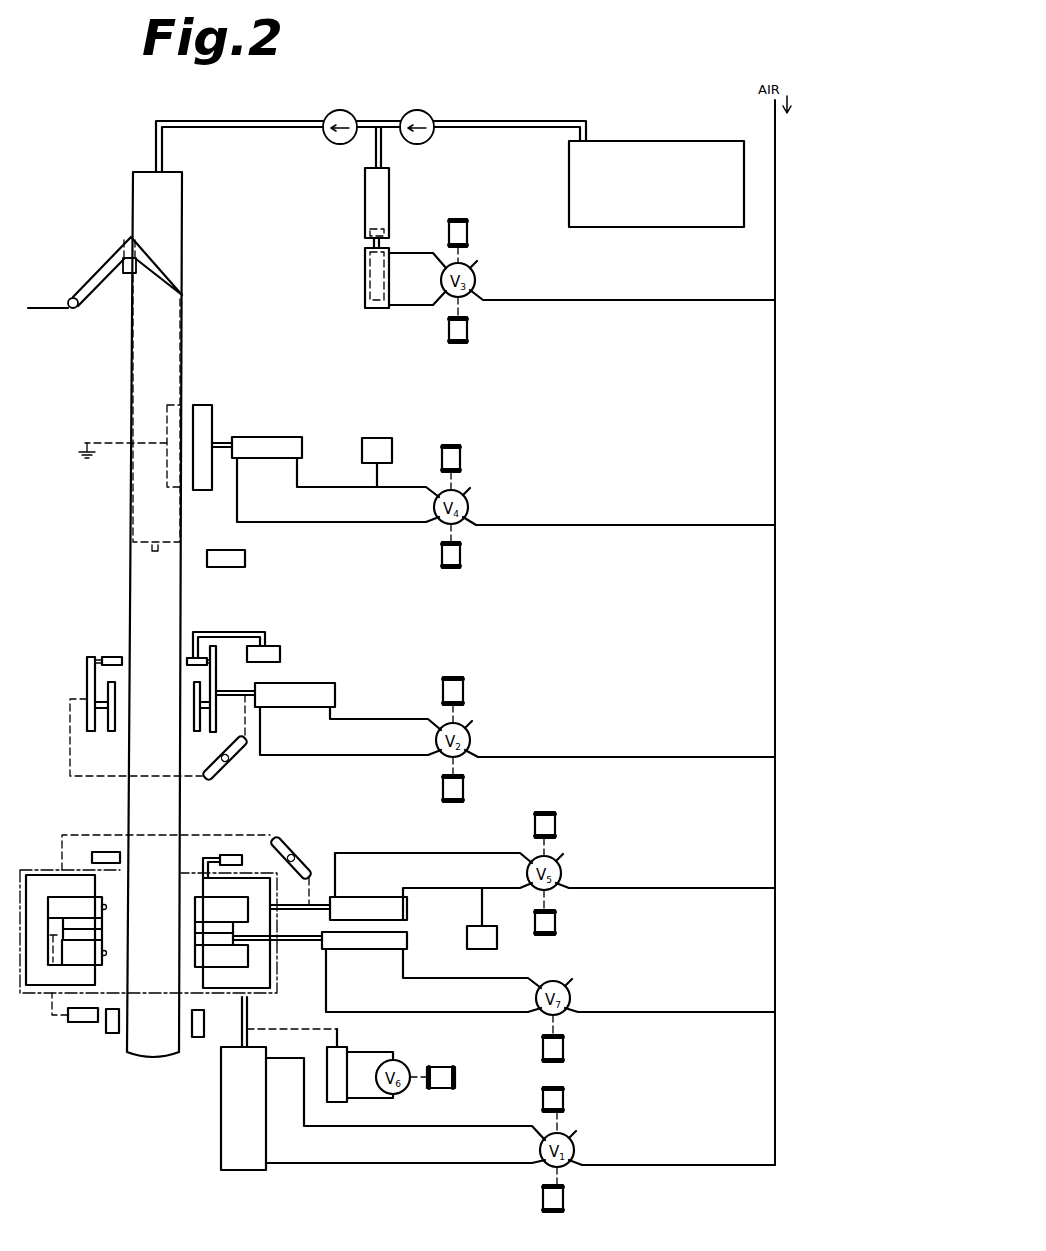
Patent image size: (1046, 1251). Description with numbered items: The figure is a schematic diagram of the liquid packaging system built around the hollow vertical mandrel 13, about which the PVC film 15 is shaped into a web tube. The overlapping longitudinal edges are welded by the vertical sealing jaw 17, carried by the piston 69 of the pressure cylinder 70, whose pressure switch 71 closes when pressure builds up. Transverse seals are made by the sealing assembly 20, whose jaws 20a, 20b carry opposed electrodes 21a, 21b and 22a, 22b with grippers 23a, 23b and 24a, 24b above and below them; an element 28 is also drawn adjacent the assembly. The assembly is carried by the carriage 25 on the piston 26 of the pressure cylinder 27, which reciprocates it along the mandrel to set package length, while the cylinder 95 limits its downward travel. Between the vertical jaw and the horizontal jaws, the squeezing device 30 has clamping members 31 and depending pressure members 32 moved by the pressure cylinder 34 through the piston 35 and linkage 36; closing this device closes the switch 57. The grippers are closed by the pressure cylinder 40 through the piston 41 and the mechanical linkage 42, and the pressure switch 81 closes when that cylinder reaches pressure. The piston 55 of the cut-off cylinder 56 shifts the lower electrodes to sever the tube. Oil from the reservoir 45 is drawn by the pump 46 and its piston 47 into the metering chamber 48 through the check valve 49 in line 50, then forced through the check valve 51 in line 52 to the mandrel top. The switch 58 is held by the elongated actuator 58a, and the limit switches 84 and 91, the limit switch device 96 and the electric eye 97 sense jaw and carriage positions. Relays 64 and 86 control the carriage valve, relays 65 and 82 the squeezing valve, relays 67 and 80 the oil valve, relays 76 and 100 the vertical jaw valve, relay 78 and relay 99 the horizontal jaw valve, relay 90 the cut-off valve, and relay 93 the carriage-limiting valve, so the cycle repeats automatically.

The mandrel 13 is at (182, 205).
The PVC film 15 is at (55, 310).
The vertical sealing jaw 17 is at (205, 405).
The high frequency sealing assembly 20 is at (148, 903).
The jaw 20a is at (90, 930).
The jaw 20b is at (209, 933).
The welding electrode 21a is at (102, 923).
The welding electrode 21b is at (102, 935).
The welding electrode 22a is at (195, 927).
The welding electrode 22b is at (195, 939).
The gripper 23a is at (77, 907).
The gripper 23b is at (77, 941).
The gripper 24a is at (221, 909).
The gripper 24b is at (221, 956).
The carriage 25 is at (258, 1008).
The piston 26 is at (242, 1028).
The pressure cylinder 27 is at (221, 1108).
The sensor 28 is at (100, 852).
The squeezing device 30 is at (253, 703).
The clamping member 31 is at (187, 661).
The pressure member 32 is at (194, 727).
The pressure cylinder 34 is at (335, 683).
The piston 35 is at (230, 691).
The linkage 36 is at (237, 758).
The pressure cylinder 40 is at (380, 897).
The piston 41 is at (305, 912).
The mechanical linkage 42 is at (300, 862).
The reservoir 45 is at (655, 141).
The controlled volume pump 46 is at (365, 282).
The piston 47 is at (372, 245).
The metering chamber 48 is at (365, 193).
The check valve 49 is at (420, 110).
The line 50 is at (545, 122).
The check valve 51 is at (345, 112).
The line 52 is at (222, 121).
The piston 55 is at (312, 942).
The pressure cylinder 56 is at (385, 949).
The switch 57 is at (272, 646).
The switch 58 is at (242, 858).
The switch actuator 58a is at (205, 858).
The relay 64 is at (563, 1198).
The relay 65 is at (463, 790).
The relay 67 is at (467, 330).
The piston 69 is at (222, 443).
The pressure cylinder 70 is at (290, 440).
The pressure switch 71 is at (390, 447).
The relay 76 is at (460, 458).
The relay coil 78 is at (555, 822).
The relay 80 is at (467, 233).
The pressure switch 81 is at (470, 935).
The relay 82 is at (463, 690).
The limit switch 84 is at (82, 1022).
The relay 86 is at (563, 1100).
The relay 90 is at (563, 1047).
The limit switch 91 is at (196, 1037).
The relay 93 is at (445, 1067).
The cylinder 95 is at (338, 1102).
The limit switch device 96 is at (112, 1033).
The electric eye 97 is at (223, 550).
The relay 99 is at (555, 920).
The relay 100 is at (460, 555).